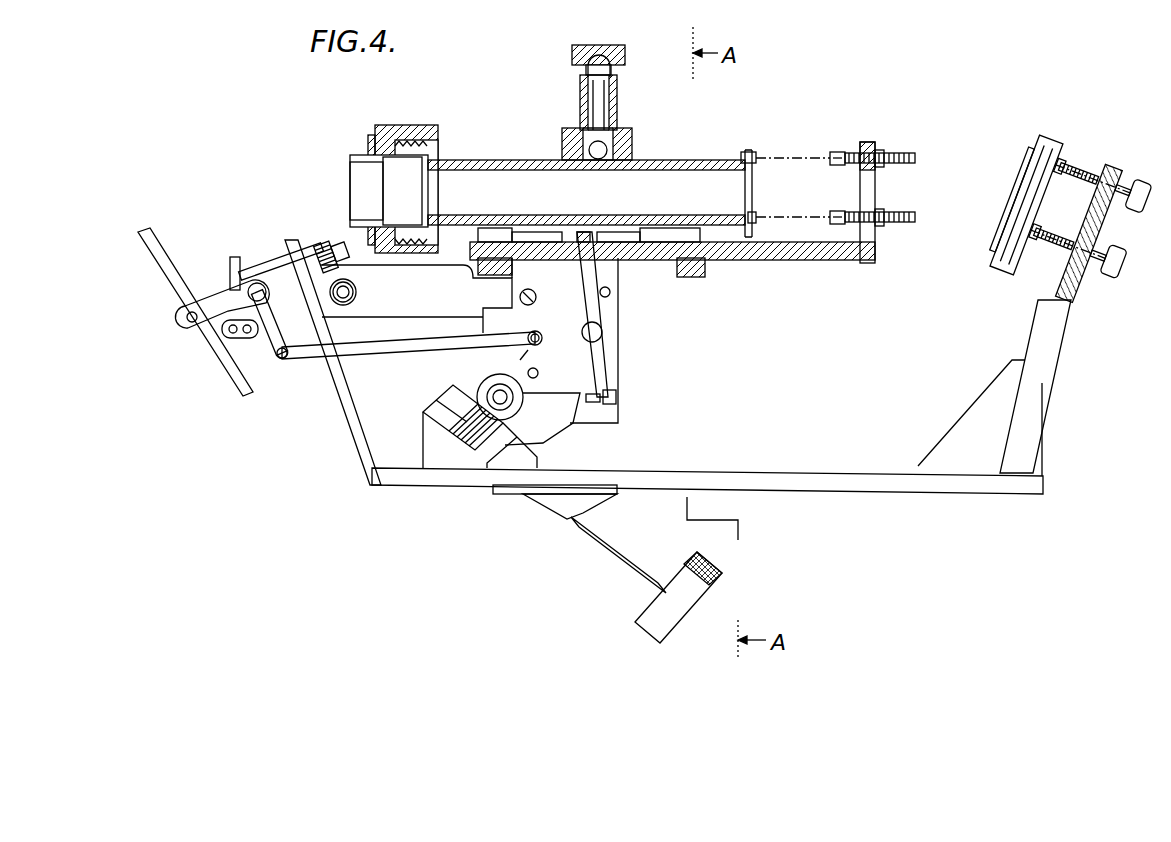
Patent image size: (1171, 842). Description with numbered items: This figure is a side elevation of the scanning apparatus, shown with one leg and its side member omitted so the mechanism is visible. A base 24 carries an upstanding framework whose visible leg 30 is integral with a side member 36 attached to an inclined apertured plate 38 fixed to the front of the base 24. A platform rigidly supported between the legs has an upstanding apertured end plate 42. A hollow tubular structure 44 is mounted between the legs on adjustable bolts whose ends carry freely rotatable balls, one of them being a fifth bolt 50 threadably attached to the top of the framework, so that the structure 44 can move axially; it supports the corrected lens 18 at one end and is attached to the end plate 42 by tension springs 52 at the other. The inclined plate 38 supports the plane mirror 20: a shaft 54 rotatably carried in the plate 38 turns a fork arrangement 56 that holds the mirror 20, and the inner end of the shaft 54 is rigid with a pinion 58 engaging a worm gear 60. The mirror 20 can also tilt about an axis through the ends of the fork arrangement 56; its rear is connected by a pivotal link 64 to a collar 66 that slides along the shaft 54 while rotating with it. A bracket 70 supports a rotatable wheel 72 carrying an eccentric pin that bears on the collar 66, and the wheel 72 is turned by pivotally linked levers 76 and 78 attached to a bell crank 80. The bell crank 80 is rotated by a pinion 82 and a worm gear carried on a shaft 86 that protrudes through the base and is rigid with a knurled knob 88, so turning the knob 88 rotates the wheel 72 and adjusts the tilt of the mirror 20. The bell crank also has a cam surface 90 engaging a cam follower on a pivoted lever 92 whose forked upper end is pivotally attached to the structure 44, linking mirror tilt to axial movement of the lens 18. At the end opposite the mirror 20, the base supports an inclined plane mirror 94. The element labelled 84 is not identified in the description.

The corrected lens 18 is at (388, 197).
The plane mirror 20 is at (247, 392).
The base 24 is at (815, 485).
The leg 30 is at (542, 317).
The side member 36 is at (442, 308).
The inclined apertured plate 38 is at (357, 430).
The end plate 42 is at (867, 240).
The hollow tubular structure 44 is at (674, 154).
The fifth bolt 50 is at (604, 121).
The tension springs 52 is at (828, 213).
The shaft 54 is at (337, 224).
The fork arrangement 56 is at (185, 317).
The pinion 58 is at (317, 245).
The worm gear 60 is at (356, 293).
The pivotal link 64 is at (228, 332).
The collar 66 is at (240, 253).
The bracket 70 is at (268, 291).
The rotatable wheel 72 is at (240, 290).
The lever 76 is at (275, 352).
The lever 78 is at (402, 347).
The bell crank 80 is at (522, 360).
The pinion 82 is at (514, 406).
The spring housing 84 is at (455, 408).
The shaft 86 is at (623, 547).
The knurled knob 88 is at (665, 605).
The cam surface 90 is at (568, 427).
The pivoted lever 92 is at (600, 368).
The inclined plane mirror 94 is at (1008, 192).